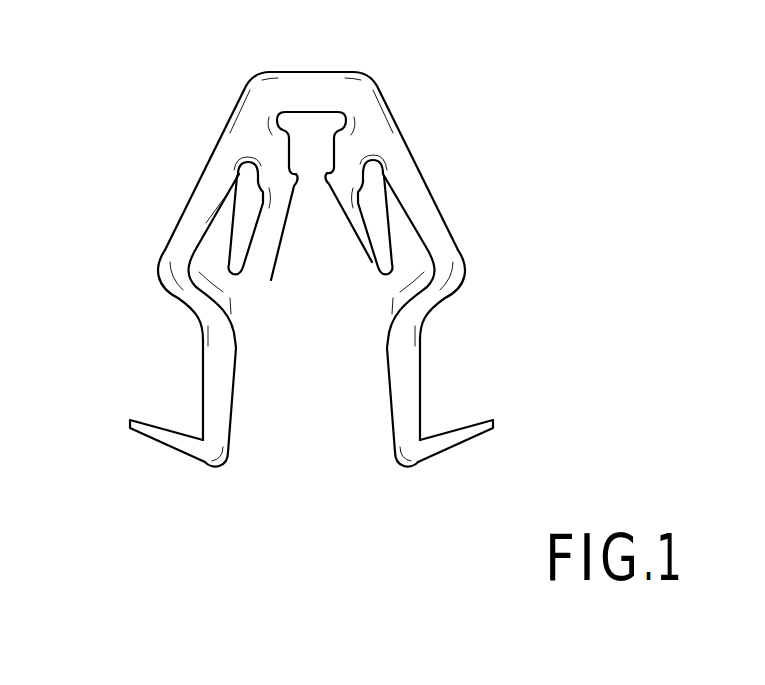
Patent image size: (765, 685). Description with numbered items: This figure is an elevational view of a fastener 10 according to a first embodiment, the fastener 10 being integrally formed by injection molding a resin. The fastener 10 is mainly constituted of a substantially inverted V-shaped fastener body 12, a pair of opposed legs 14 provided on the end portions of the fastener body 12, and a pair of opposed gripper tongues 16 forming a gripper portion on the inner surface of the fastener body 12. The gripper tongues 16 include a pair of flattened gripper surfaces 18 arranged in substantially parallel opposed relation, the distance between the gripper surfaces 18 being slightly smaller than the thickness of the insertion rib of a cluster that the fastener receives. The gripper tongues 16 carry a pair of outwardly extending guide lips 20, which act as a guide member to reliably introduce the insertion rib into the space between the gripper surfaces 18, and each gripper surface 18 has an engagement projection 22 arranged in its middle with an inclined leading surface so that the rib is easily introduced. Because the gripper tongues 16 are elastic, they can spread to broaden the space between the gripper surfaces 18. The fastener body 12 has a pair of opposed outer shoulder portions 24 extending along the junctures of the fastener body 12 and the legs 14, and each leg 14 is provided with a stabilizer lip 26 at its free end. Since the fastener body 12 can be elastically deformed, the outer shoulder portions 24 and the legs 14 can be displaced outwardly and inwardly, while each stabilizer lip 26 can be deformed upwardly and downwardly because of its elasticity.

The fastener 10 is at (463, 192).
The fastener body 12 is at (238, 100).
The legs 14 is at (213, 377).
The gripper tongues 16 is at (255, 173).
The gripper surfaces 18 is at (300, 143).
The guide lips 20 is at (233, 262).
The engagement projection 22 is at (298, 178).
The outer shoulder portions 24 is at (177, 307).
The stabilizer lip 26 is at (147, 440).